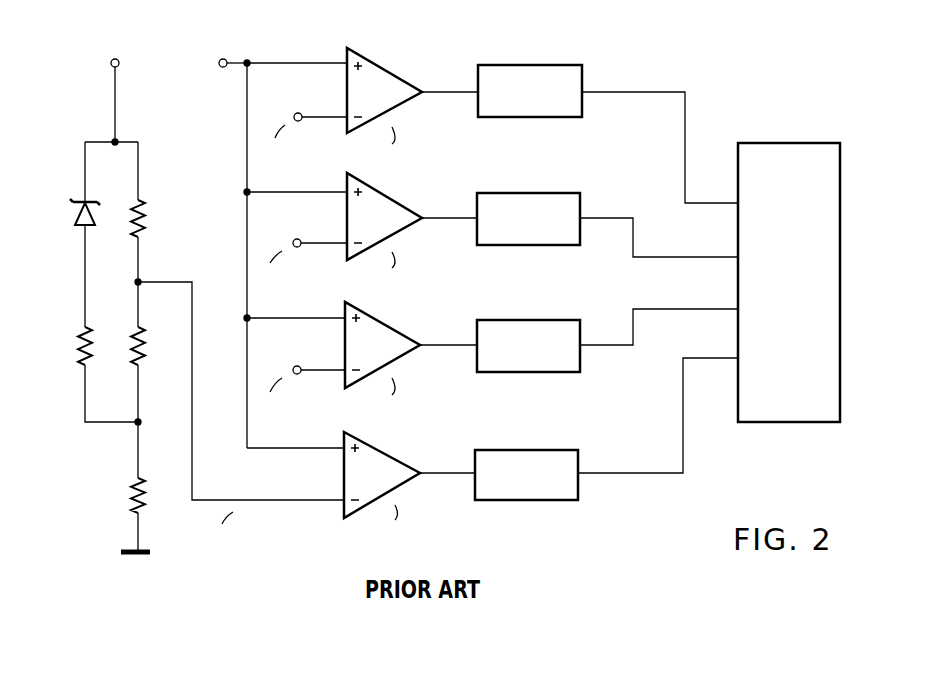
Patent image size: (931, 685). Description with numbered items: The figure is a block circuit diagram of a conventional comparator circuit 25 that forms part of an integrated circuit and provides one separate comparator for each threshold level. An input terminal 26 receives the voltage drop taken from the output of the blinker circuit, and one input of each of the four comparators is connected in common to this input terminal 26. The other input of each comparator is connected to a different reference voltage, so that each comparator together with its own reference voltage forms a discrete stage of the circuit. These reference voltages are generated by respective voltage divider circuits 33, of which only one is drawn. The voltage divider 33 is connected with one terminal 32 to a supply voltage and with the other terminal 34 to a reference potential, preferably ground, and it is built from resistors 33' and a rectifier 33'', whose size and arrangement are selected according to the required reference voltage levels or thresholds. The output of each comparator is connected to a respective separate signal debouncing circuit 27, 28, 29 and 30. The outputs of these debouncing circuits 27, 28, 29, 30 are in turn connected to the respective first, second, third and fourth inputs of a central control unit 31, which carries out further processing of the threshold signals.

The comparator circuit 25 is at (690, 52).
The input terminal 26 is at (226, 57).
The signal debouncing circuit 27 is at (575, 118).
The signal debouncing circuit 28 is at (572, 246).
The signal debouncing circuit 29 is at (572, 373).
The signal debouncing circuit 30 is at (570, 501).
The central control unit 31 is at (782, 423).
The terminal 32 is at (111, 56).
The voltage divider circuit 33 is at (191, 305).
The resistors 33' is at (110, 360).
The rectifier 33'' is at (70, 233).
The terminal 34 is at (140, 556).